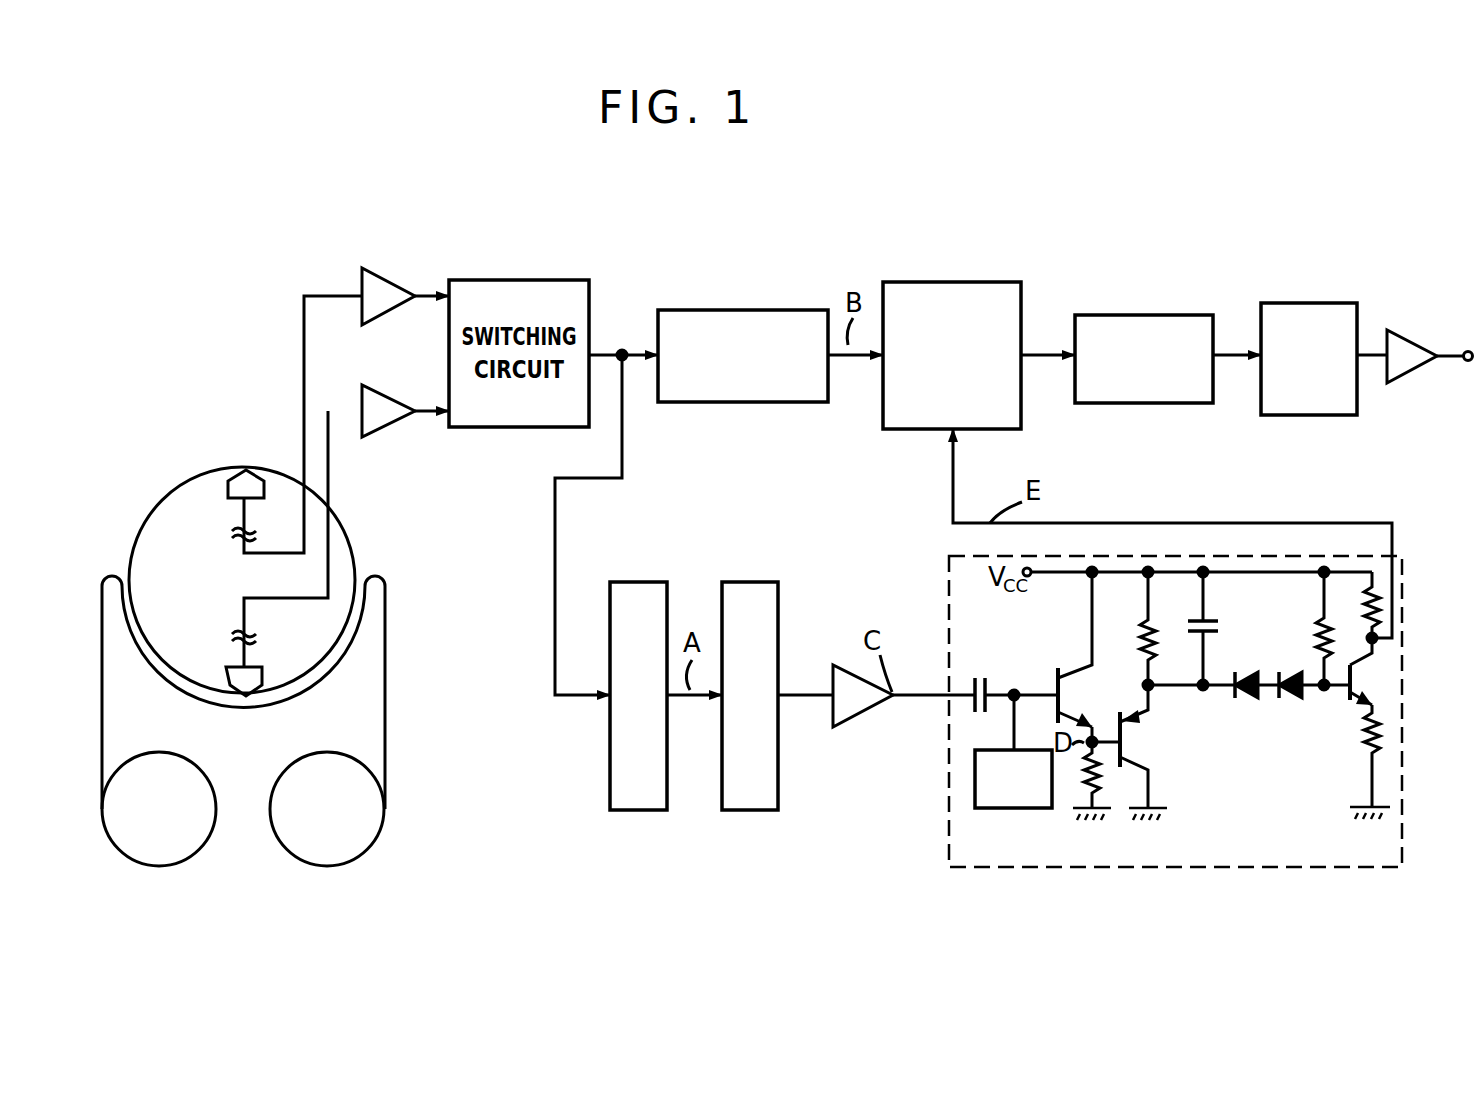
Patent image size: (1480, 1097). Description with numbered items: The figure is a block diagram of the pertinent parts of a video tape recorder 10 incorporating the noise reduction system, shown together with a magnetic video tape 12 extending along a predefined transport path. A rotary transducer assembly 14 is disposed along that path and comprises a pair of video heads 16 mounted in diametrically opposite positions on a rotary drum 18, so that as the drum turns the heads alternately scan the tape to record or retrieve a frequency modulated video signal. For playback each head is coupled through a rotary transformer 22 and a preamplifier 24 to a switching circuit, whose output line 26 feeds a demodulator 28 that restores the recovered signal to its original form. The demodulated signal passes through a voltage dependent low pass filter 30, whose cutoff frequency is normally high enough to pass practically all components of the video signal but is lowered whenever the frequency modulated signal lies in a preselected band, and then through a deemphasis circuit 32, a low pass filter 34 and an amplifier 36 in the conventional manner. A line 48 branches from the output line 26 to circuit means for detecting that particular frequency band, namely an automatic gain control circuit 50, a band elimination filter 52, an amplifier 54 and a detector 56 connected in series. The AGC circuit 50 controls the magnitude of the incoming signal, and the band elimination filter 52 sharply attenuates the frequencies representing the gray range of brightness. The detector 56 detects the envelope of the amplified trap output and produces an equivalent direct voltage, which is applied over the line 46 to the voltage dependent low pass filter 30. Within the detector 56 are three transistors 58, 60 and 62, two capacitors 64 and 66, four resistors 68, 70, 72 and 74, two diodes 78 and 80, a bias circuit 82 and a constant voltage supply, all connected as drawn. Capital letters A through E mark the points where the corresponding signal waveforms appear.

The video tape recorder 10 is at (200, 237).
The magnetic video tape 12 is at (386, 685).
The rotary transducer assembly 14 is at (172, 456).
The video heads 16 is at (247, 468).
The rotary drum 18 is at (162, 504).
The rotary transformer 22 is at (234, 540).
The preamplifier 24 is at (400, 278).
The output line 26 is at (600, 348).
The demodulator 28 is at (732, 310).
The voltage dependent low pass filter 30 is at (956, 282).
The deemphasis circuit 32 is at (1140, 315).
The low pass filter 34 is at (1310, 303).
The amplifier 36 is at (1405, 340).
The line 46 is at (1200, 522).
The line 48 is at (553, 546).
The automatic gain control circuit 50 is at (640, 582).
The band elimination filter 52 is at (738, 582).
The amplifier 54 is at (860, 715).
The detector 56 is at (949, 840).
The transistor 58 is at (1056, 675).
The transistor 60 is at (1152, 752).
The transistor 62 is at (1346, 698).
The capacitor 64 is at (982, 676).
The capacitor 66 is at (1218, 630).
The resistor 68 is at (1095, 777).
The resistor 70 is at (1140, 634).
The resistor 72 is at (1324, 632).
The resistor 74 is at (1362, 612).
The diode 78 is at (1248, 698).
The diode 80 is at (1294, 698).
The bias circuit 82 is at (1013, 808).